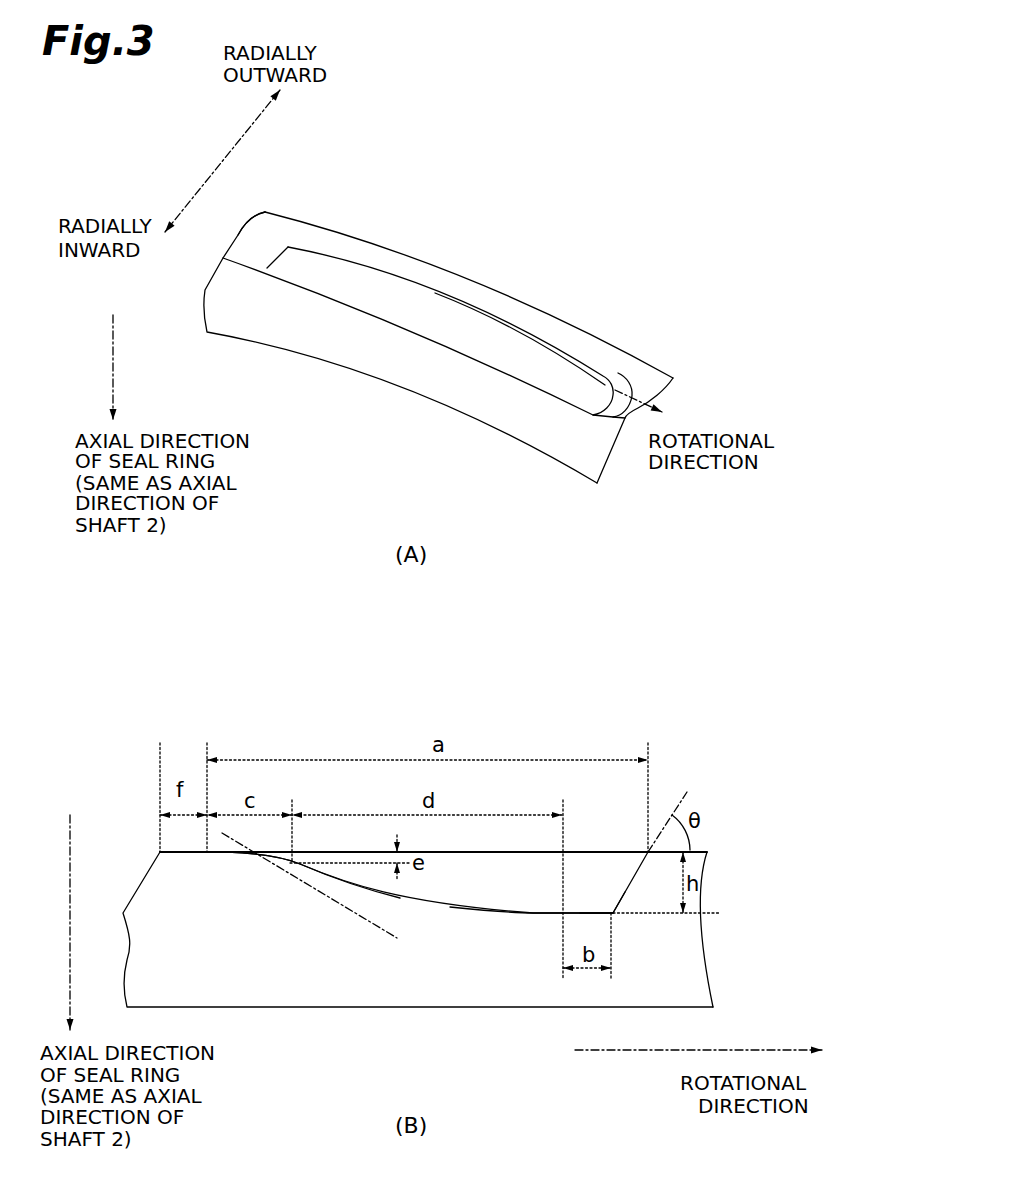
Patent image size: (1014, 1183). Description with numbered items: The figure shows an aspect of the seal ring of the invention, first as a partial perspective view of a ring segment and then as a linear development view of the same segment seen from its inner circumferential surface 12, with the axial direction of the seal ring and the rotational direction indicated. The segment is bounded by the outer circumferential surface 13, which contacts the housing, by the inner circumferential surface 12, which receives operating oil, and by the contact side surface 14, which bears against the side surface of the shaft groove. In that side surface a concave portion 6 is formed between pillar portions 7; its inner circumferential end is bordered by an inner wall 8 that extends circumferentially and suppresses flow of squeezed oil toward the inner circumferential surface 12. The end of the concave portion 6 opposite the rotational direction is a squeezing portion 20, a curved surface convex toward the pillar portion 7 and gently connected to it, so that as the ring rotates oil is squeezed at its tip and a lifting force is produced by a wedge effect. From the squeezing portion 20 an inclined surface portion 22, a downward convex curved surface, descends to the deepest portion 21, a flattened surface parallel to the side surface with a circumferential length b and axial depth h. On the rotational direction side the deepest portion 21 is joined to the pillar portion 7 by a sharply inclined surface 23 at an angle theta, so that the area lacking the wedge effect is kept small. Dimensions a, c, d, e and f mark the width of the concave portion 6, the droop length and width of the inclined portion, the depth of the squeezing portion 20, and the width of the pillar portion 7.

The concave portion 6 is at (478, 330).
The pillar portion 7 is at (265, 212).
The inner wall 8 is at (383, 300).
The inner circumferential surface 12 is at (238, 307).
The outer circumferential surface 13 is at (363, 238).
The contact side surface 14 is at (292, 238).
The squeezing portion 20 is at (275, 856).
The deepest portion 21 is at (593, 911).
The inclined surface portion 22 is at (520, 911).
The sharply inclined surface 23 is at (610, 385).